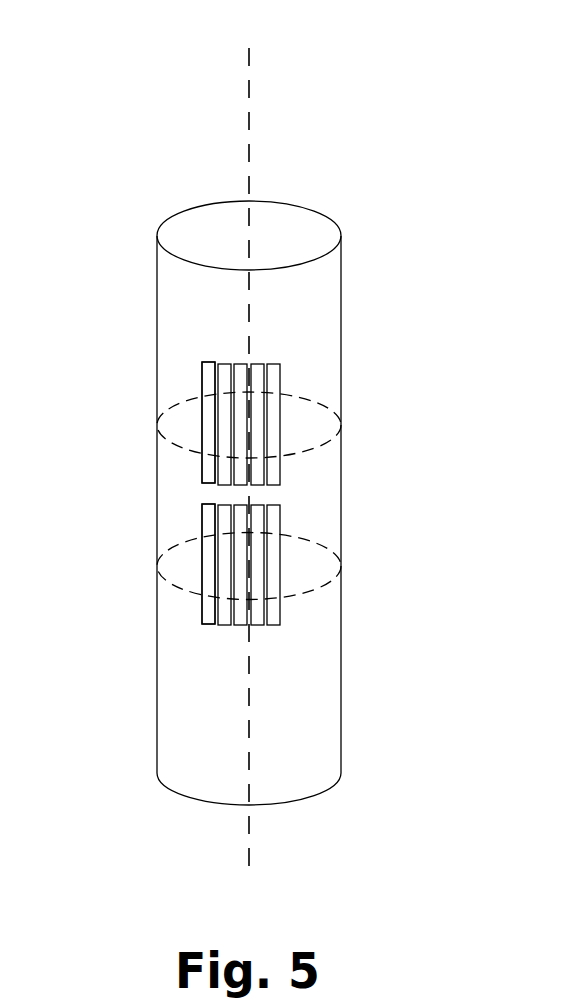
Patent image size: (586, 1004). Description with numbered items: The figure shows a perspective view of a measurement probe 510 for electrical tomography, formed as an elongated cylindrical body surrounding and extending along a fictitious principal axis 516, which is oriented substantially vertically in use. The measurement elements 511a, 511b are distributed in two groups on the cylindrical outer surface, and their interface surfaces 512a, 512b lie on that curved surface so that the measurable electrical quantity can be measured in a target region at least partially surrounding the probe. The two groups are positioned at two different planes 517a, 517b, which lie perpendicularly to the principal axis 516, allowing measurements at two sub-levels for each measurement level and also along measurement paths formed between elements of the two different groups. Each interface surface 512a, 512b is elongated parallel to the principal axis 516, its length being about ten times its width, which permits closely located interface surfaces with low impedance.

The measurement probe 510 is at (394, 235).
The principal axis 516 is at (249, 147).
The measurement elements 511a is at (212, 367).
The interface surfaces 512a is at (212, 428).
The measurement elements 511b is at (212, 503).
The interface surfaces 512b is at (212, 568).
The plane 517a is at (303, 445).
The plane 517b is at (303, 587).